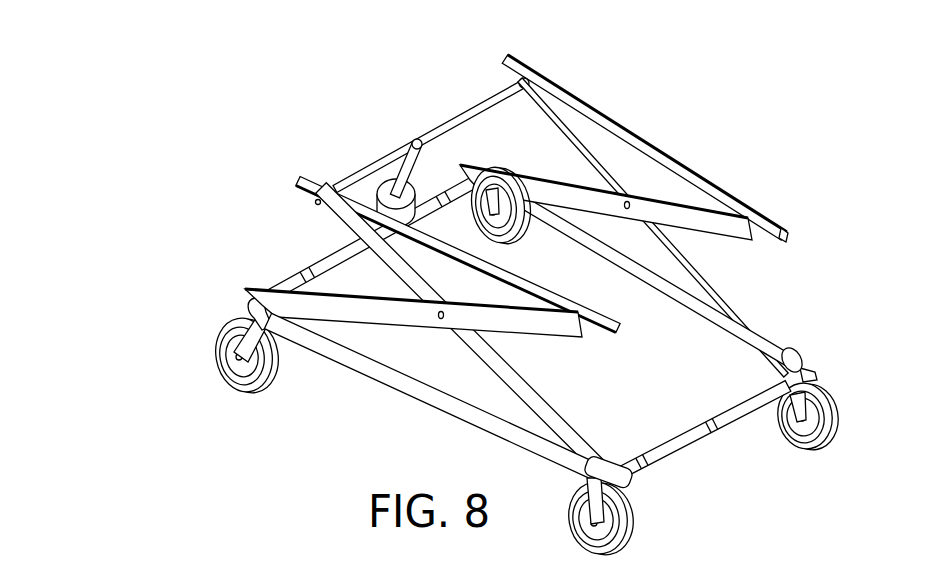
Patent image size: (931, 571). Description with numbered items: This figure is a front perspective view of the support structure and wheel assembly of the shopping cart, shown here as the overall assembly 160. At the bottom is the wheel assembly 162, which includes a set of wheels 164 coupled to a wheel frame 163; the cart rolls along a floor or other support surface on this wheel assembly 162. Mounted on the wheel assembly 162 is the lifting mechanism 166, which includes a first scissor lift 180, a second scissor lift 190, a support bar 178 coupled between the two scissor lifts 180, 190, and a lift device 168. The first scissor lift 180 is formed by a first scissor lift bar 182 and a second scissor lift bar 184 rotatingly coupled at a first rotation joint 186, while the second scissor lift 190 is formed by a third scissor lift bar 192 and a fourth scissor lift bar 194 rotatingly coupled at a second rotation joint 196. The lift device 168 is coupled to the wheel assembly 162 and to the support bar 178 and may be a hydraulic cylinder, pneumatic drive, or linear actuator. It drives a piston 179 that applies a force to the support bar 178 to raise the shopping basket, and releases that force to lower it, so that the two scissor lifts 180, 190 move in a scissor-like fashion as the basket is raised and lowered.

The cart frame assembly 160 is at (467, 307).
The wheel assembly 162 is at (188, 305).
The wheel frame 163 is at (377, 375).
The set of wheels 164 is at (729, 493).
The lifting mechanism 166 is at (708, 88).
The lift device 168 is at (408, 196).
The support bar 178 is at (447, 123).
The piston 179 is at (407, 160).
The first scissor lift 180 is at (312, 170).
The first scissor lift bar 182 is at (560, 418).
The second scissor lift bar 184 is at (365, 314).
The first rotation joint 186 is at (442, 320).
The second scissor lift 190 is at (760, 205).
The third scissor lift bar 192 is at (573, 140).
The fourth scissor lift bar 194 is at (540, 192).
The second rotation joint 196 is at (688, 233).